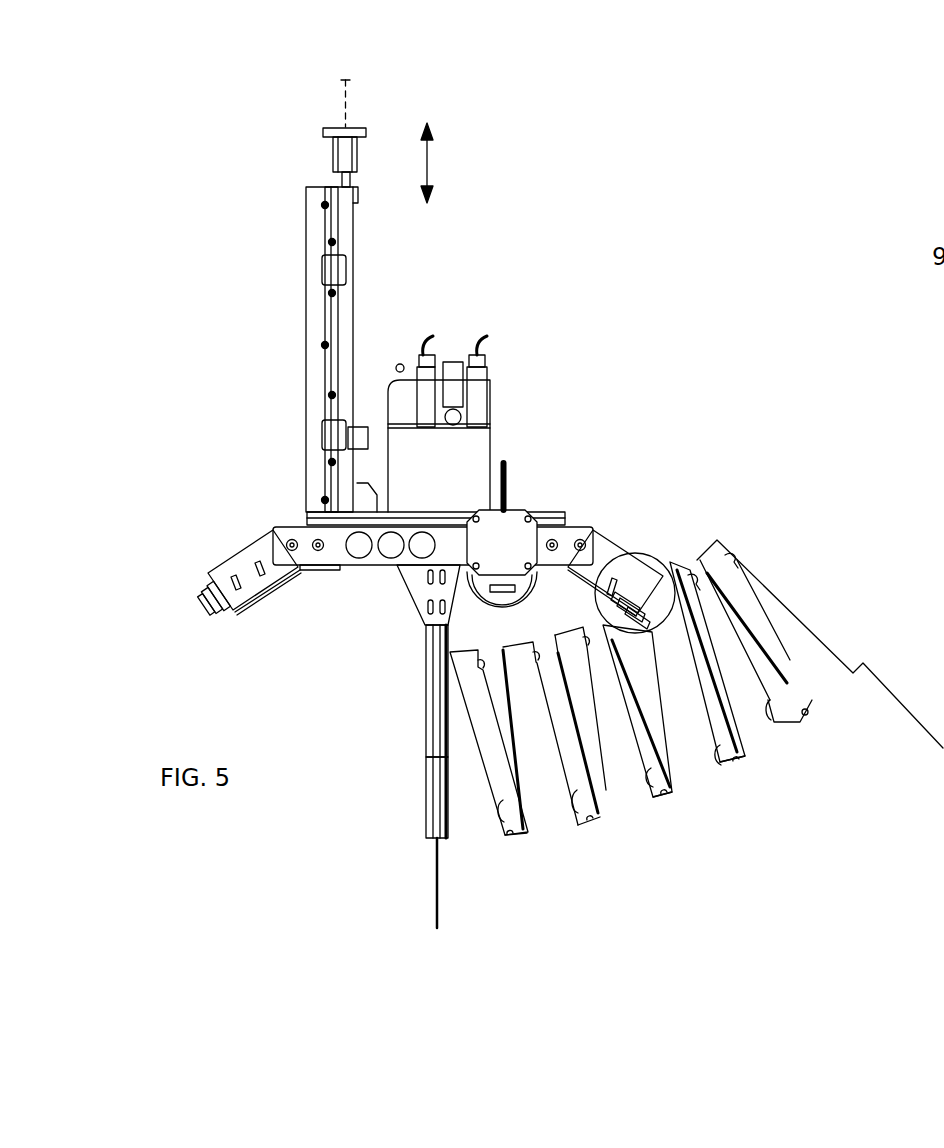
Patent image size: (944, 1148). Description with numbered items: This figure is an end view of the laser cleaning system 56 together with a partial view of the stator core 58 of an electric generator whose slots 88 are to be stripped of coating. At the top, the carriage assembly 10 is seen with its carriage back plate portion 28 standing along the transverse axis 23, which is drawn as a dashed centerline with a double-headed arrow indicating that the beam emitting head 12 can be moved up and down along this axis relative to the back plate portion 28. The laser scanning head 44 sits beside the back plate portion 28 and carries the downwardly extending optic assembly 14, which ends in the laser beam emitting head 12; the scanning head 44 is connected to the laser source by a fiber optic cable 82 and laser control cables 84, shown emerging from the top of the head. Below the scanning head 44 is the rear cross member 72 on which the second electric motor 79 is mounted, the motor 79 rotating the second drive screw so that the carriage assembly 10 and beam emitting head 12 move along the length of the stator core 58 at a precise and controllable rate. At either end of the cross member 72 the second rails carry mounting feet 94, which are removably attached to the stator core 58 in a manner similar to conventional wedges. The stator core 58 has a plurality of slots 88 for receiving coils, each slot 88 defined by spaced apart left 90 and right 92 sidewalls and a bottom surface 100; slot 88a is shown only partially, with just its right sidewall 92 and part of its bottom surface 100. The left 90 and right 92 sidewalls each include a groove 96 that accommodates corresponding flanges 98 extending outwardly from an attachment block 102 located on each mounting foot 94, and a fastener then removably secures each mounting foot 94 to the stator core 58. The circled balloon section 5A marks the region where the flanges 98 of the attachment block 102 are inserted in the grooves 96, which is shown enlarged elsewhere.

The carriage assembly 10 is at (447, 273).
The laser beam emitting head 12 is at (415, 807).
The optic assembly 14 is at (426, 712).
The transverse axis 23 is at (347, 82).
The carriage back plate portion 28 is at (306, 208).
The laser scanning head 44 is at (493, 448).
The laser cleaning system 56 is at (522, 152).
The stator core 58 is at (787, 613).
The rear cross member 72 is at (296, 557).
The second electric motor 79 is at (515, 557).
The fiber optic cable 82 is at (490, 380).
The laser control cables 84 is at (407, 375).
The slots 88 is at (563, 716).
The slot 88a is at (428, 840).
The left sidewall 90 is at (502, 823).
The right sidewall 92 is at (527, 822).
The mounting feet 94 is at (233, 556).
The groove 96 is at (482, 670).
The flanges 98 is at (200, 603).
The bottom surface 100 is at (510, 837).
The attachment block 102 is at (210, 612).
The balloon section 5A is at (635, 553).